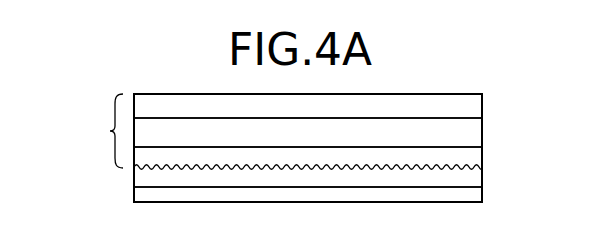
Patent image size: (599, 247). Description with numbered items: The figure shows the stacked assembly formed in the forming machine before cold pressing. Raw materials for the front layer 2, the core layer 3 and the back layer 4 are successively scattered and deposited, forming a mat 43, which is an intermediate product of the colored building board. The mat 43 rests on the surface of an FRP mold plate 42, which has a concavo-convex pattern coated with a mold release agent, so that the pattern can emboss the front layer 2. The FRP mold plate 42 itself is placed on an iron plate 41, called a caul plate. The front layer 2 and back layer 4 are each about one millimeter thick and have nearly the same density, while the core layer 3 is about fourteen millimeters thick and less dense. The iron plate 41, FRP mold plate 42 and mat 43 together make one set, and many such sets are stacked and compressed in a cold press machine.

The front layer 2 is at (473, 155).
The core layer 3 is at (473, 129).
The back layer 4 is at (473, 103).
The iron plate 41 is at (473, 190).
The FRP mold plate 42 is at (143, 179).
The mat 43 is at (98, 131).